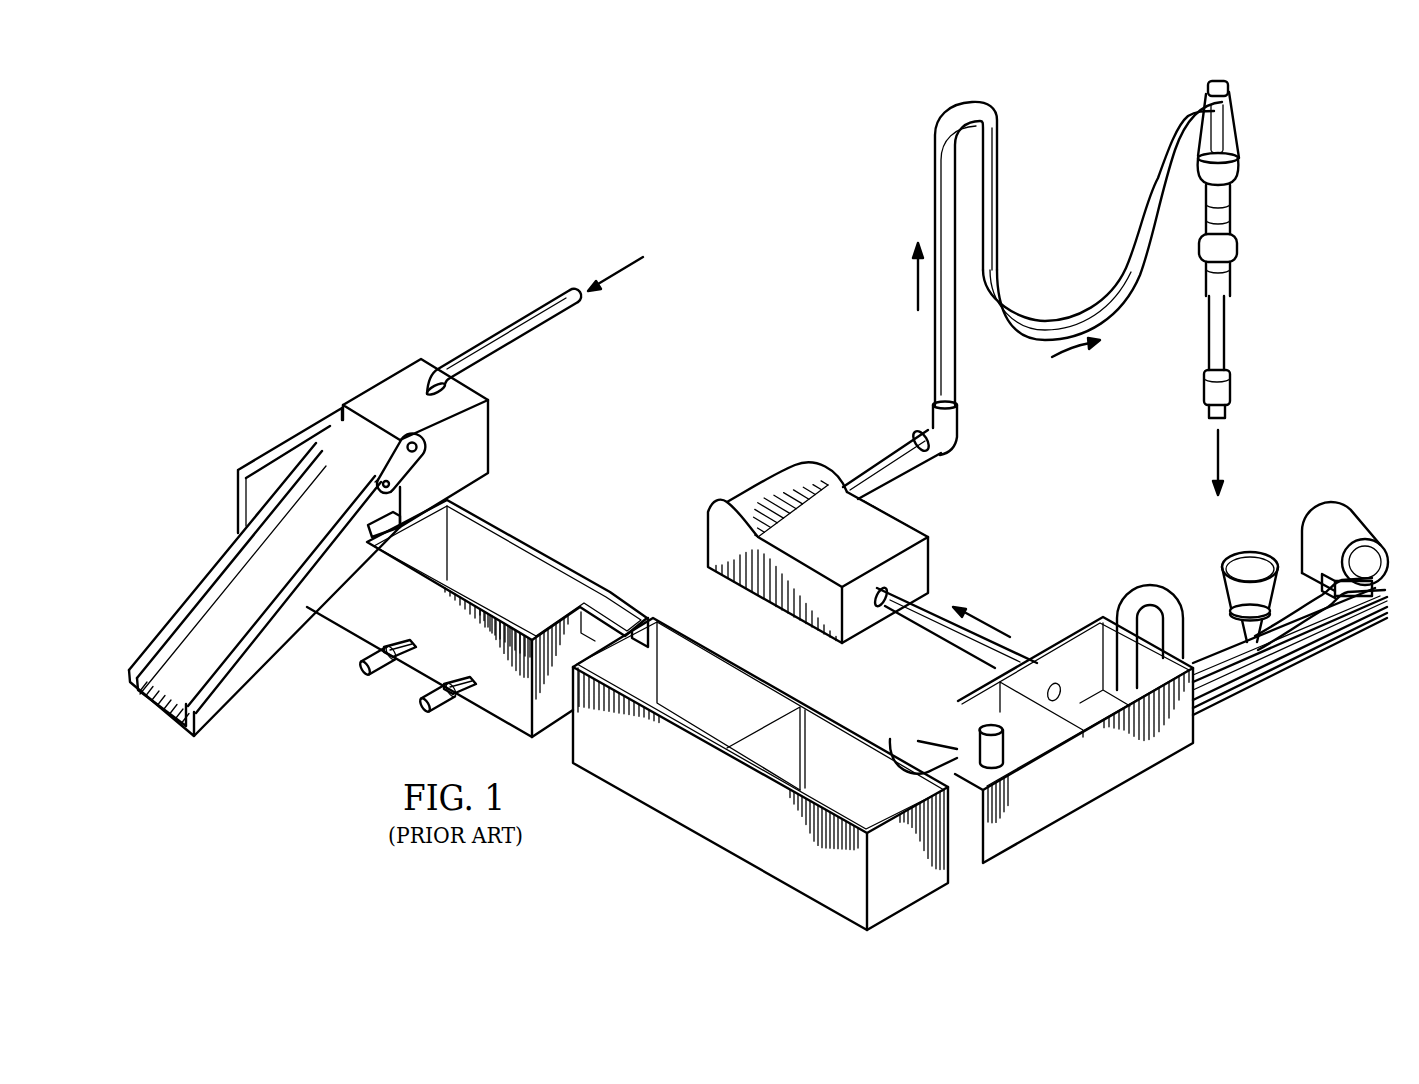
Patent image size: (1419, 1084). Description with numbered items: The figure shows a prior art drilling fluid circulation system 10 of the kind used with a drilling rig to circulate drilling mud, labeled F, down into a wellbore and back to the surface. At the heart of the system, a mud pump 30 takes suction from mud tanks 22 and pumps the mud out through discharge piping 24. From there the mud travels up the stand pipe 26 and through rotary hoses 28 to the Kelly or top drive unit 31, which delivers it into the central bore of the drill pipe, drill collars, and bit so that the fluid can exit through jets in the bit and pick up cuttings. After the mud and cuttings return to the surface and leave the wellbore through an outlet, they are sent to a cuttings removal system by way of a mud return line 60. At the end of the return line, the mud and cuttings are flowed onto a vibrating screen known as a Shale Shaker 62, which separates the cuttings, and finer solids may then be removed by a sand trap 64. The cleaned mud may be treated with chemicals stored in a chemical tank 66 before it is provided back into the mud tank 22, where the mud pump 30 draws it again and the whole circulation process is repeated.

The drilling fluid circulation system 10 is at (758, 505).
The mud tanks 22 is at (1074, 724).
The discharge piping 24 is at (907, 470).
The stand pipe 26 is at (957, 379).
The rotary hoses 28 is at (1047, 321).
The mud pump 30 is at (758, 487).
The Kelly or top drive unit 31 is at (1231, 330).
The mud return line 60 is at (505, 320).
The Shale Shaker 62 is at (492, 434).
The sand trap 64 is at (535, 541).
The chemical tank 66 is at (1007, 745).